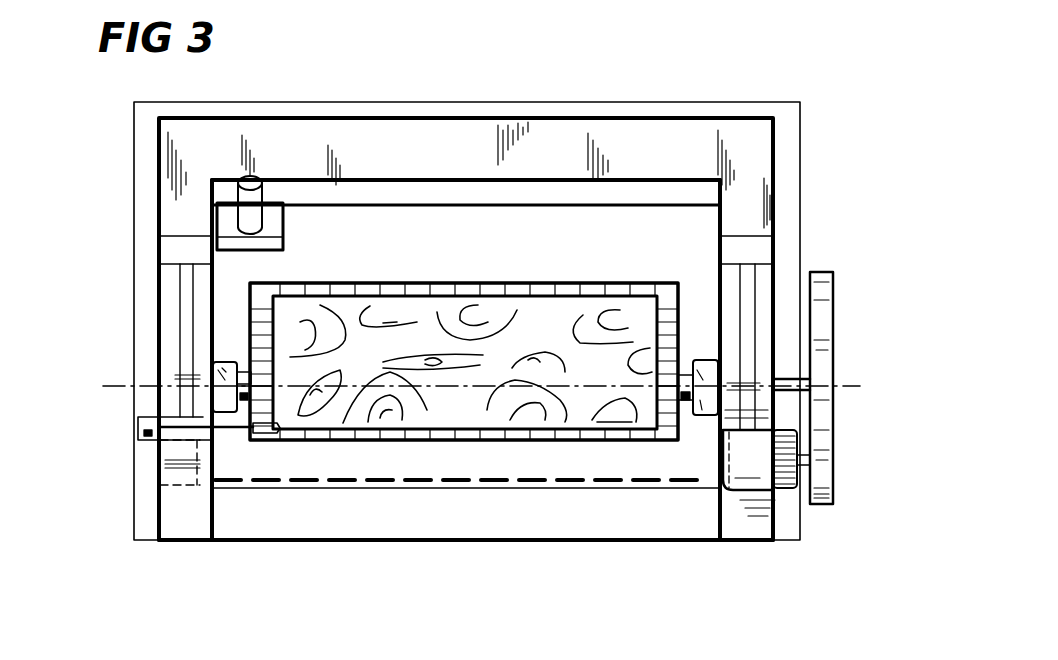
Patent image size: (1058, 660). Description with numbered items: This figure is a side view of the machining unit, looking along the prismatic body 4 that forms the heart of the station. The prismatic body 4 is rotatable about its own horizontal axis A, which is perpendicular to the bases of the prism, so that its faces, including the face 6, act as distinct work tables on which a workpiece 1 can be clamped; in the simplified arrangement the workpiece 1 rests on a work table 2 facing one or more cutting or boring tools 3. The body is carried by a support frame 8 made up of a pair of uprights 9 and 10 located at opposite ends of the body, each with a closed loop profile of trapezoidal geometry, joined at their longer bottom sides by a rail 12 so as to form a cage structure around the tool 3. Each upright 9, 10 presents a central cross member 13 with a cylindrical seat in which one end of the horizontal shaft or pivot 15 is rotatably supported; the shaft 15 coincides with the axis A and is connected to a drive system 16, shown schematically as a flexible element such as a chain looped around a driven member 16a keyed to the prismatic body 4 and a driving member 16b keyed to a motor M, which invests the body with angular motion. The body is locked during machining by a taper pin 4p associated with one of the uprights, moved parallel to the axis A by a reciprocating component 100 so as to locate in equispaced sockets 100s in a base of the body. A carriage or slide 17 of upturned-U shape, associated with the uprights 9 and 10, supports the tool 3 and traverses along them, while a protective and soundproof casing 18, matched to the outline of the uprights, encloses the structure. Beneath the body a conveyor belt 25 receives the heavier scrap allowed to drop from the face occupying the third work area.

The workpiece 1 is at (357, 415).
The work table 2 is at (420, 446).
The cutting or boring tool 3 is at (248, 205).
The prismatic body 4 is at (525, 272).
The taper pin 4p is at (222, 428).
The face of the prismatic body 6 is at (380, 282).
The support frame 8 is at (608, 528).
The upright 9 is at (170, 278).
The upright 10 is at (738, 528).
The rail 12 is at (492, 530).
The cross member 13 is at (220, 370).
The horizontal shaft or pivot 15 is at (683, 373).
The drive system 16 is at (836, 246).
The driven member 16a is at (825, 317).
The driving member 16b is at (827, 448).
The carriage or slide 17 is at (437, 158).
The protective and soundproof casing 18 is at (134, 118).
The conveyor belt 25 is at (299, 482).
The reciprocating component 100 is at (142, 437).
The sockets 100s is at (263, 432).
The horizontal axis A is at (474, 360).
The motor M is at (788, 488).